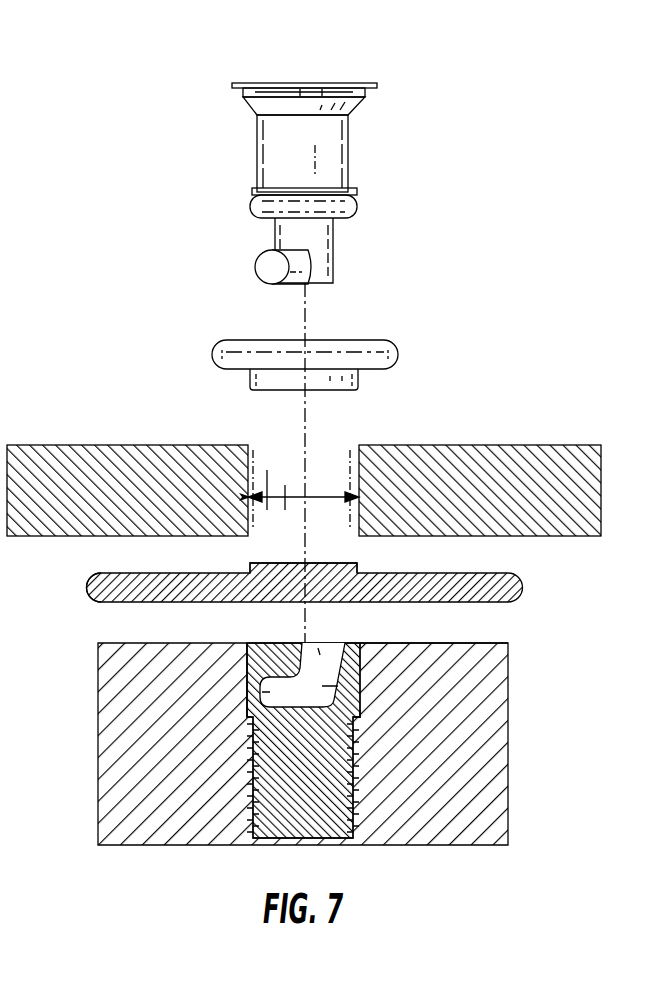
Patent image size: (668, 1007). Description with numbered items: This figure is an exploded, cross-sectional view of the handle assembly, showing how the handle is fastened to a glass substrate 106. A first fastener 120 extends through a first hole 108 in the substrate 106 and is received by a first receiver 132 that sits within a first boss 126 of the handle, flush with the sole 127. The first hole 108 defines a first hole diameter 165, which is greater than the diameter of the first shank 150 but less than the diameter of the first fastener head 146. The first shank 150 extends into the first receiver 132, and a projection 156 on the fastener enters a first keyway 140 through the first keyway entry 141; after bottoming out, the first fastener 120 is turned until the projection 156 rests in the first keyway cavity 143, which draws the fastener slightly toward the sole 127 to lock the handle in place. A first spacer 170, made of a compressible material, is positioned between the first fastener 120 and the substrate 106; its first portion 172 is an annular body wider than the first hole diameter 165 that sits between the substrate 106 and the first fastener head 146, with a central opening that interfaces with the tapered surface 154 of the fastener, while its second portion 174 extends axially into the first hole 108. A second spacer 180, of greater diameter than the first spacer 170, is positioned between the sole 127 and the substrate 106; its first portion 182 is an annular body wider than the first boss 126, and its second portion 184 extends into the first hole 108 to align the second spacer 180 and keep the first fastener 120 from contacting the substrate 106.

The substrate 106 is at (515, 445).
The first hole 108 is at (341, 440).
The first fastener 120 is at (190, 116).
The first boss 126 is at (513, 722).
The sole 127 is at (443, 643).
The first receiver 132 is at (365, 703).
The first keyway 140 is at (325, 687).
The first keyway entry 141 is at (323, 650).
The first keyway cavity 143 is at (247, 697).
The first fastener head 146 is at (365, 93).
The first shank 150 is at (343, 157).
The tapered surface 154 is at (349, 113).
The projection 156 is at (285, 250).
The first hole diameter 165 is at (297, 492).
The first spacer 170 is at (418, 352).
The first portion 172 is at (212, 345).
The second portion 174 is at (250, 382).
The second spacer 180 is at (543, 590).
The first portion 182 is at (248, 571).
The second portion 184 is at (87, 587).